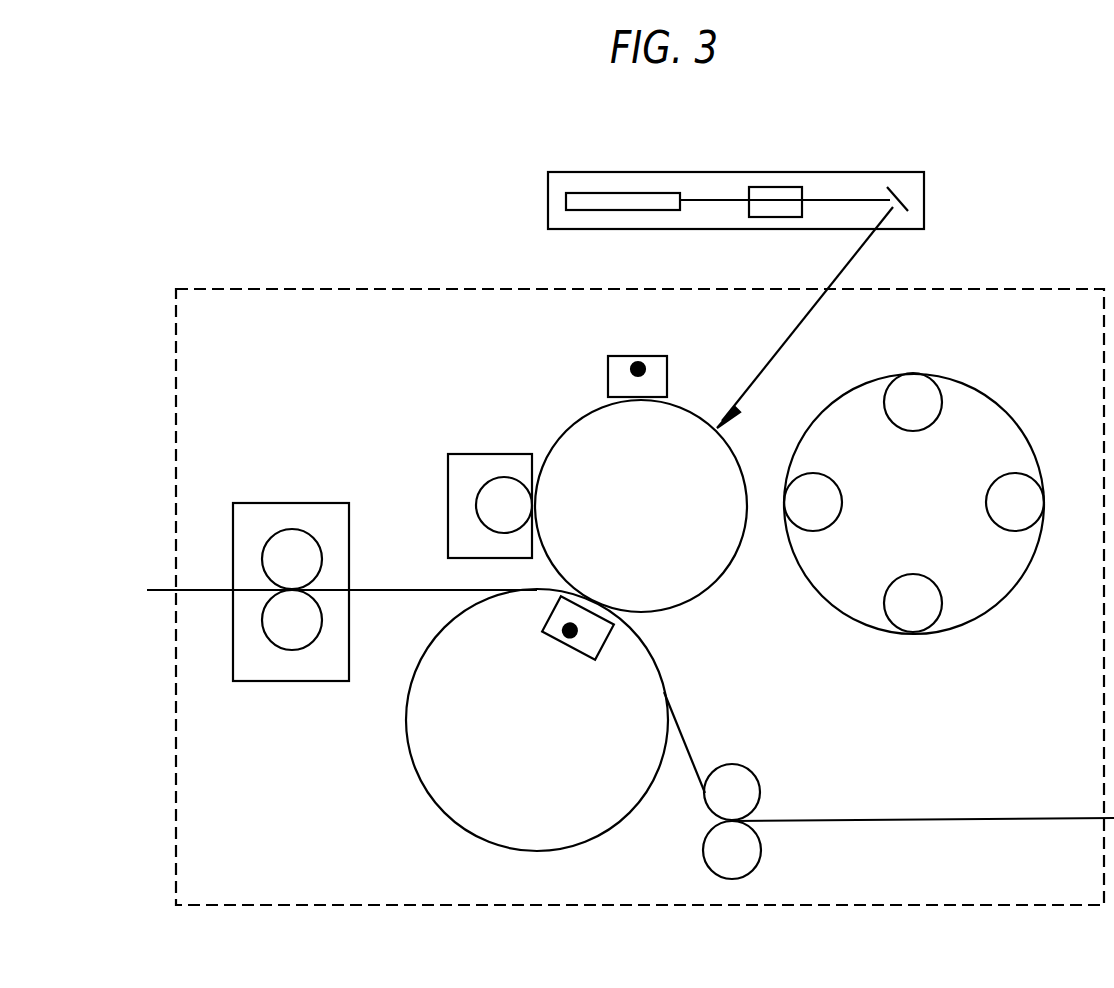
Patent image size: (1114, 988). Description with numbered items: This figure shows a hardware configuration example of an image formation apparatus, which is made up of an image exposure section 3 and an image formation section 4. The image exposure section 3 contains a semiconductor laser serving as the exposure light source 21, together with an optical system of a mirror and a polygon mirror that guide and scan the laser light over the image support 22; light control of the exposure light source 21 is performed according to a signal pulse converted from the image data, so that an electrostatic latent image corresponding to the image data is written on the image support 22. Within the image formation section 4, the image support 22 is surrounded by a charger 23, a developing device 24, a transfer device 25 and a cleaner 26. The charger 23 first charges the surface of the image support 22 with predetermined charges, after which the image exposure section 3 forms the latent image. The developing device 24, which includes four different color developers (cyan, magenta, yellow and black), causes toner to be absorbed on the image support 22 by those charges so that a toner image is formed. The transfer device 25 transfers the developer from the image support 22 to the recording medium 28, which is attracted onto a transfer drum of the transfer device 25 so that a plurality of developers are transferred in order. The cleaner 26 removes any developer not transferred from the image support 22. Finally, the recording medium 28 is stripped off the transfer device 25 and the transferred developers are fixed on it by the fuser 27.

The image exposure section 3 is at (740, 268).
The exposure light source 21 is at (638, 192).
The image formation section 4 is at (995, 288).
The image support 22 is at (707, 590).
The charger 23 is at (608, 372).
The developing device 24 is at (1008, 410).
The transfer device 25 is at (417, 773).
The cleaner 26 is at (482, 454).
The fuser 27 is at (312, 503).
The recording medium 28 is at (897, 820).